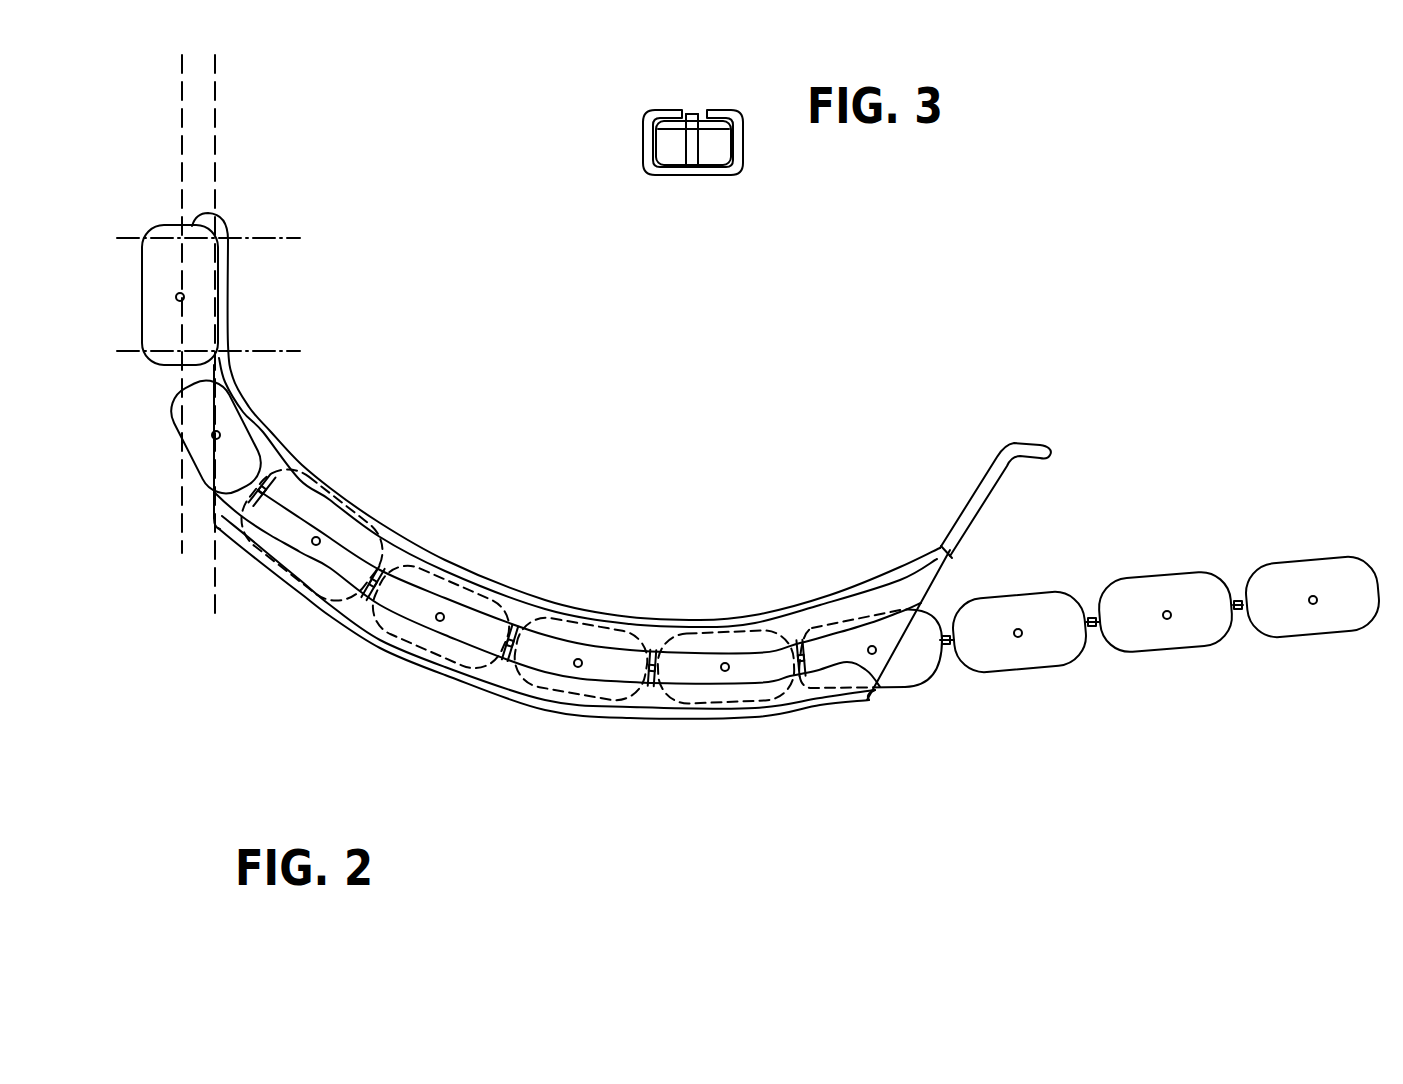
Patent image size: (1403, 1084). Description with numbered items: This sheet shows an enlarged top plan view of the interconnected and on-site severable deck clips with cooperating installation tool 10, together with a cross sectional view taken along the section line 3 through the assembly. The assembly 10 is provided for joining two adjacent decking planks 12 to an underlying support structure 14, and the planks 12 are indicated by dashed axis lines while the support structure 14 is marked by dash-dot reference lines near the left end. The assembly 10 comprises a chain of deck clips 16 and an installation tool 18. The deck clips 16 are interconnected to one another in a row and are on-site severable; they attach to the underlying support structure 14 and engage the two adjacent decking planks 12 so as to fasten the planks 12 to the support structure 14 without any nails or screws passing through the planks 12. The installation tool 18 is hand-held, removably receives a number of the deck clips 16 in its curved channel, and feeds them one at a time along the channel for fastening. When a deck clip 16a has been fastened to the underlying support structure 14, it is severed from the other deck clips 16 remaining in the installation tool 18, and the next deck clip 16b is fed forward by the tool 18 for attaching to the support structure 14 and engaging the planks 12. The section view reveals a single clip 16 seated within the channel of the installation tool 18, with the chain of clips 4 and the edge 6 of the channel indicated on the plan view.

In FIG. 2, the interconnected and on-site severable deck clips with cooperating installation to 10 is at (553, 466).
In FIG. 2, the decking planks 12 is at (110, 140).
In FIG. 2, the underlying support structure 14 is at (250, 312).
In FIG. 2, the deck clips 16 is at (1317, 557).
In FIG. 3, the deck clips 16 is at (692, 110).
In FIG. 2, the deck clip 16a is at (160, 270).
In FIG. 2, the next deck clip 16b is at (195, 421).
In FIG. 2, the installation tool 18 is at (963, 513).
In FIG. 3, the installation tool 18 is at (640, 135).
In FIG. 2, the pod chain 4 is at (1177, 575).
In FIG. 2, the band edge 6 is at (727, 617).
In FIG. 2, the section line 3- 3 is at (540, 550).